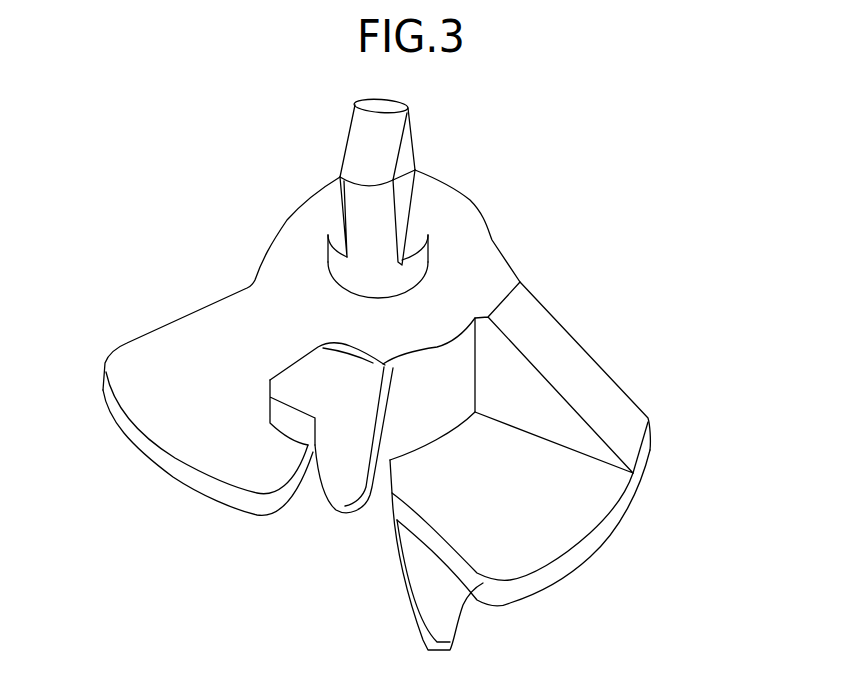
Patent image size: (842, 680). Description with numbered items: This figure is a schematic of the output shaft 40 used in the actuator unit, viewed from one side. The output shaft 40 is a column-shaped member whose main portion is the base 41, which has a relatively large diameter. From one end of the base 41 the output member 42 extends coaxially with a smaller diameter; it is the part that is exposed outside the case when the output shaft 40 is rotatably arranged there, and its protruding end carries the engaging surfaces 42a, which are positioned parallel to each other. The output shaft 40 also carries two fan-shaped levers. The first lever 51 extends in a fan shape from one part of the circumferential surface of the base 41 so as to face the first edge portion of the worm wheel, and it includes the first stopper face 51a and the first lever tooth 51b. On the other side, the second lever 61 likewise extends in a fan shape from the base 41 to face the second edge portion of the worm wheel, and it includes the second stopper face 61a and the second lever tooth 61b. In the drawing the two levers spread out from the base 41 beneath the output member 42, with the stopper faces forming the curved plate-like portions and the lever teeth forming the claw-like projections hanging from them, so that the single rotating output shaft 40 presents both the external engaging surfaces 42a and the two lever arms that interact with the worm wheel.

The output shaft 40 is at (570, 223).
The base 41 is at (442, 377).
The output member 42 is at (392, 179).
The engaging surfaces 42a is at (340, 180).
The first lever 51 is at (235, 477).
The first stopper face 51a is at (213, 490).
The first lever tooth 51b is at (338, 490).
The second lever 61 is at (564, 557).
The second stopper face 61a is at (570, 560).
The second lever tooth 61b is at (450, 628).